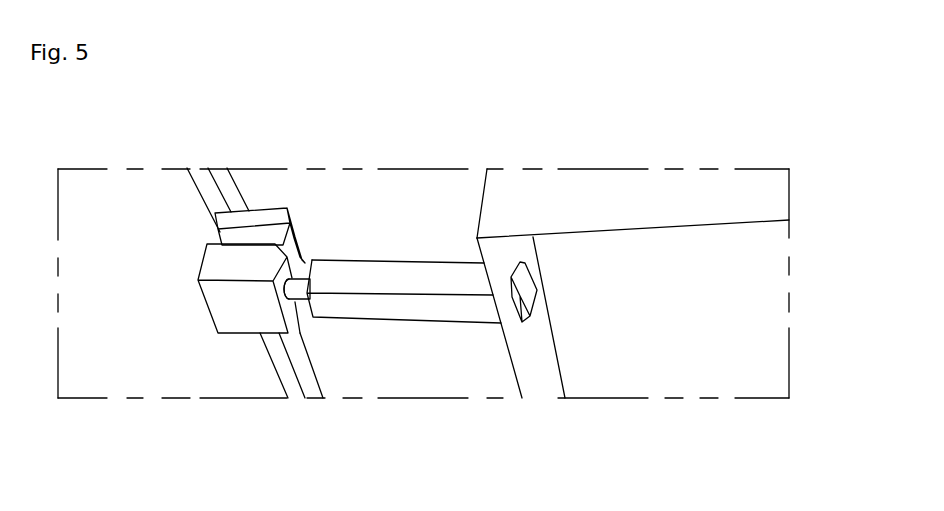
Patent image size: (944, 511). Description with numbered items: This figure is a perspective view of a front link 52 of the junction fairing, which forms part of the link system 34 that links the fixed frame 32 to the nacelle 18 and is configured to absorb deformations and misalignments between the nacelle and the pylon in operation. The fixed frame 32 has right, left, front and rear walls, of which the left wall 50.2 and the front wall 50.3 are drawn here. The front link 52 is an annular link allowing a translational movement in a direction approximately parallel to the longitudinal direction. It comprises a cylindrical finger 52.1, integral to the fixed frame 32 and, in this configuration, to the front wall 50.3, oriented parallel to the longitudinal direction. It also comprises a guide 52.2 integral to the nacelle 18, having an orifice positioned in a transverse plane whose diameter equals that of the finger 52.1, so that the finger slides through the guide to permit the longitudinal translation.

The nacelle 18 is at (207, 155).
The fixed frame 32 is at (768, 205).
The link system 34 is at (424, 228).
The left wall 50.2 is at (588, 208).
The front wall 50.3 is at (533, 352).
The front link 52 is at (367, 243).
The cylindrical finger 52.1 is at (305, 300).
The guide 52.2 is at (305, 292).